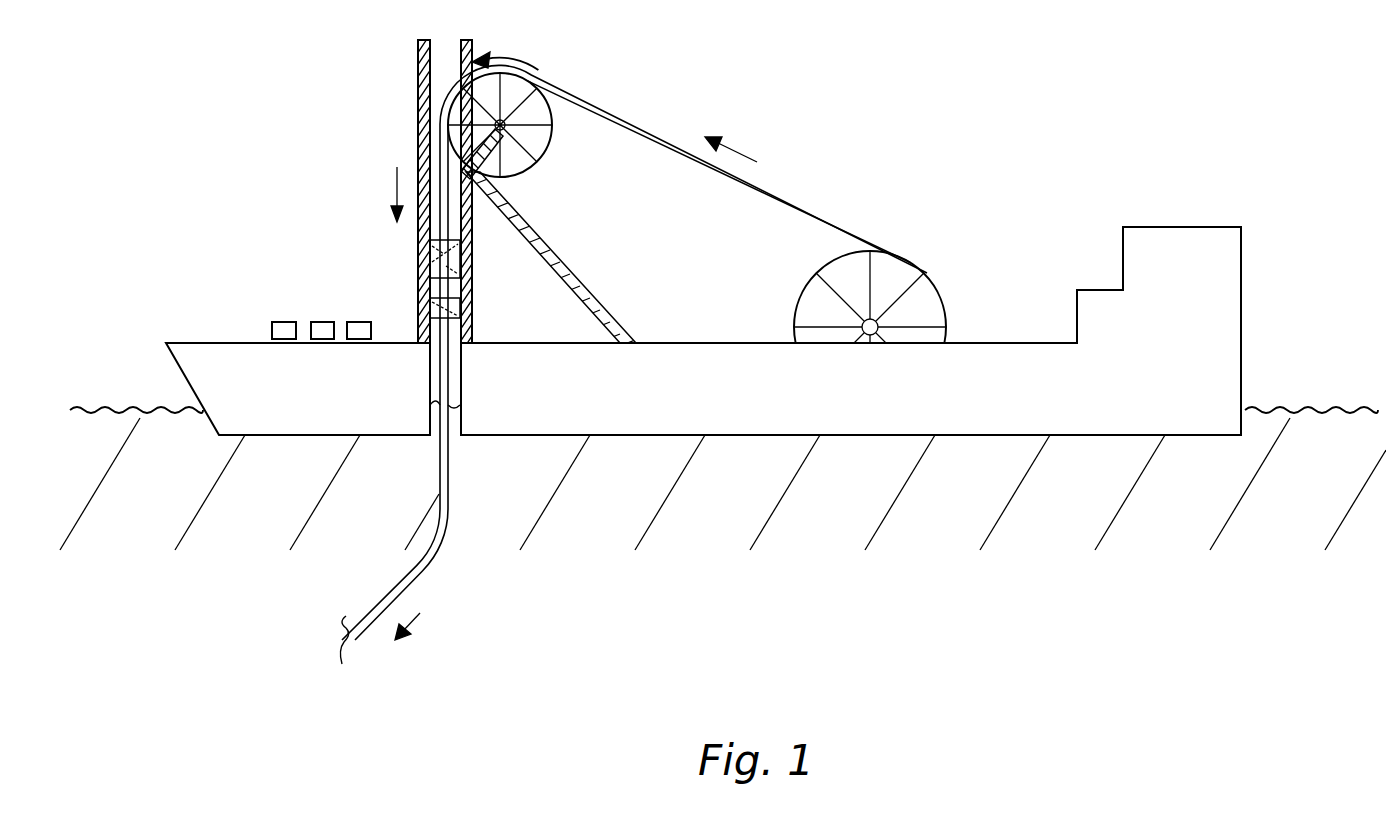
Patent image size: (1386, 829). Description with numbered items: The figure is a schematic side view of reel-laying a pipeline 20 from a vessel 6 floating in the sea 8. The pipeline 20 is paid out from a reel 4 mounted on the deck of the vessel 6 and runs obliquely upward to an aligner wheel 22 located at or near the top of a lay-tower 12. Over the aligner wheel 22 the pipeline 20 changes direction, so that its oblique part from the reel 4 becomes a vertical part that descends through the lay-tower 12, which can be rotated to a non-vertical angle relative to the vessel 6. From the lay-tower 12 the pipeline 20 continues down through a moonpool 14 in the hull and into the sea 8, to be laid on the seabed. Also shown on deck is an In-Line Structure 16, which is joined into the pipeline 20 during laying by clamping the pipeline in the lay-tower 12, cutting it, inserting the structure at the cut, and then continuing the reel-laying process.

The reel 4 is at (938, 292).
The vessel 6 is at (1171, 385).
The sea 8 is at (813, 583).
The lay-tower 12 is at (418, 123).
The moonpool 14 is at (430, 395).
The In-Line Structure (ILS) 16 is at (348, 322).
The pipeline 20 is at (795, 207).
The aligner wheel 22 is at (550, 147).